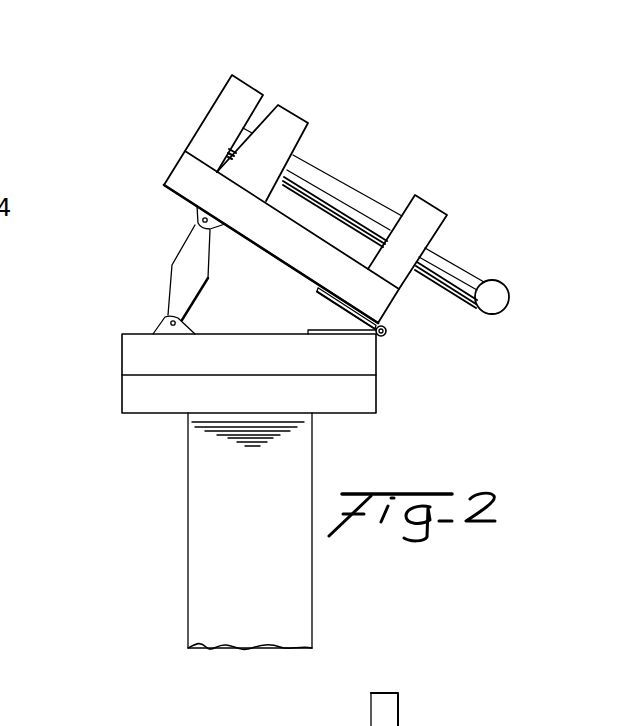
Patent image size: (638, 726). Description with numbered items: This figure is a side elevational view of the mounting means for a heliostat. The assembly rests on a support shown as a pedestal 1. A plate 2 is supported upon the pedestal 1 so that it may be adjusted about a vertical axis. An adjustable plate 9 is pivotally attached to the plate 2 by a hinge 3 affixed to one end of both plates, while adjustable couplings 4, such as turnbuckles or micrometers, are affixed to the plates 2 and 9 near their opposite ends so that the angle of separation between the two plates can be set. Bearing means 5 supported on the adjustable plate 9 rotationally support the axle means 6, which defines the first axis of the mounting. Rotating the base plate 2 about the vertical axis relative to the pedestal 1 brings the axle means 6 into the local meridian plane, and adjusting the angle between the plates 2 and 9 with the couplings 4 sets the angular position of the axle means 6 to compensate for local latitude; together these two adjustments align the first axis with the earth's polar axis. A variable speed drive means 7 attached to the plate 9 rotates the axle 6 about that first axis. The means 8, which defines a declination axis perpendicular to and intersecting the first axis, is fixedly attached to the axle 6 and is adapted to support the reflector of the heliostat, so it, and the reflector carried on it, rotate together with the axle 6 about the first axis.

The pedestal 1 is at (187, 563).
The plate 2 is at (122, 368).
The hinge 3 is at (388, 334).
The adjustable couplings 4 is at (171, 262).
The bearing means 5 is at (293, 127).
The axle means defining first axis 6 is at (440, 250).
The variable speed drive means 7 is at (208, 113).
The means defining declination axis 8 is at (487, 317).
The adjustable plate 9 is at (167, 177).